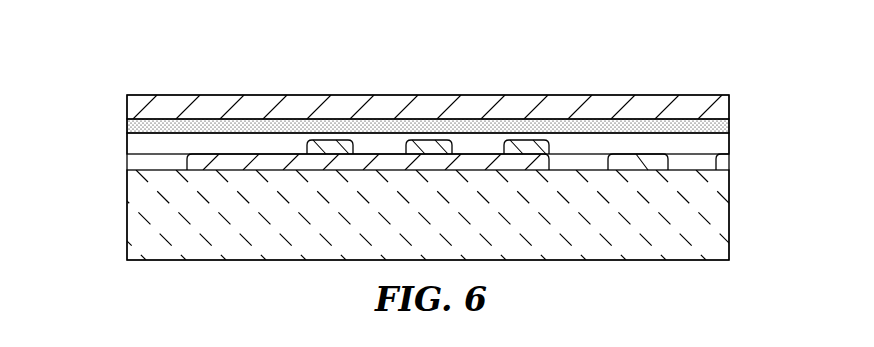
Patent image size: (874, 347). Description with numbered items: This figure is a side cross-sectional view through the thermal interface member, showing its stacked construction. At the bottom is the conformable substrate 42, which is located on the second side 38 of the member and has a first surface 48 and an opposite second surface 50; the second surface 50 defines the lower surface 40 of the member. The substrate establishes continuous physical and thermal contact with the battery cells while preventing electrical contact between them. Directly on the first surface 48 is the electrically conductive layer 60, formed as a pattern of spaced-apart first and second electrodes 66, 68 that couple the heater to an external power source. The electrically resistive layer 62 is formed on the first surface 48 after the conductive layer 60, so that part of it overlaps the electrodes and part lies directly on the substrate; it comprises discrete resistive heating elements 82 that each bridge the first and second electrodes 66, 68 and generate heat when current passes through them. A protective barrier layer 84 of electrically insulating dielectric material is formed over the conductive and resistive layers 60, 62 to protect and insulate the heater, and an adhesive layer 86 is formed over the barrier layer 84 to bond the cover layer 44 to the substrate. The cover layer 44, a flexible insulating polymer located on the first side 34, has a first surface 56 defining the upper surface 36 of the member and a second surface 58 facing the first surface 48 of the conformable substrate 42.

The first side 34 is at (178, 86).
The upper surface 36 is at (465, 76).
The second side 38 is at (231, 272).
The lower surface 40 is at (403, 252).
The conformable substrate 42 is at (424, 252).
The cover layer 44 is at (415, 76).
The first surface 48 is at (719, 157).
The second surface 50 is at (403, 252).
The first surface 56 is at (682, 95).
The second surface 58 is at (729, 122).
The electrically conductive layer 60 is at (295, 132).
The electrically resistive layer 62 is at (296, 146).
The first electrode 66 is at (370, 154).
The second electrode 68 is at (626, 154).
The resistive heating element 82 is at (518, 140).
The protective barrier layer 84 is at (729, 141).
The adhesive layer 86 is at (425, 117).